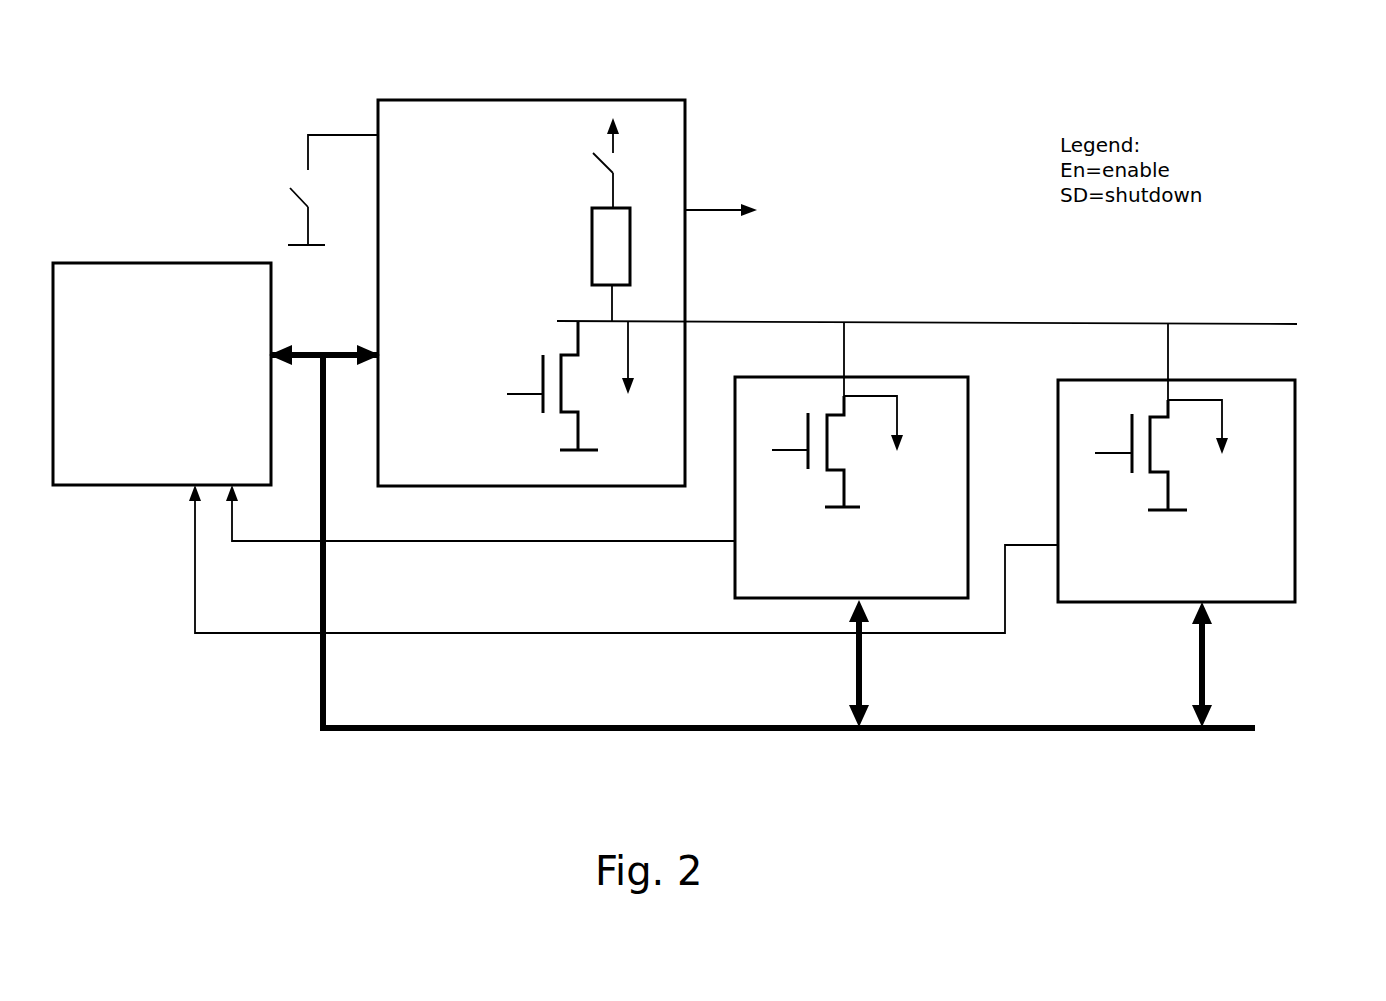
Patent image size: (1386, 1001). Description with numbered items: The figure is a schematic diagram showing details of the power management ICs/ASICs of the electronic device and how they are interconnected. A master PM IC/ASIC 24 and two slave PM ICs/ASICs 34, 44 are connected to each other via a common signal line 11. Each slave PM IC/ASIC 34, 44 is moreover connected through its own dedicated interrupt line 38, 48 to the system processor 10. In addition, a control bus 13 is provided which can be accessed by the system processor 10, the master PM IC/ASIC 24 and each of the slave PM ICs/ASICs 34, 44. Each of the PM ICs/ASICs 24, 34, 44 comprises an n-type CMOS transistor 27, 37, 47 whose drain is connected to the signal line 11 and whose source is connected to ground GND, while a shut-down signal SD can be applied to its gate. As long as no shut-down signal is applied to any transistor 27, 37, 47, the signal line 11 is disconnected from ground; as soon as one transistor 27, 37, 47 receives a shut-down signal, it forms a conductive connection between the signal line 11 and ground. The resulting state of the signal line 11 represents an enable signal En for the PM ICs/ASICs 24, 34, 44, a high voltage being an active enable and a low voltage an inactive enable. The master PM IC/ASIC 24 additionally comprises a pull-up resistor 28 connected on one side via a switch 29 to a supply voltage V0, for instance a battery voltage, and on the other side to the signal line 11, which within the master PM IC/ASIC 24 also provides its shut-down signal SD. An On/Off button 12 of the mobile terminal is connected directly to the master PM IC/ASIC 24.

The system processor 10 is at (80, 263).
The signal line 11 is at (1257, 324).
The On/Off button 12 is at (302, 168).
The control bus 13 is at (377, 729).
The master PM IC/ASIC 24 is at (470, 100).
The n-type CMOS transistor 27 is at (535, 368).
The pull-up resistor 28 is at (634, 228).
The switch 29 is at (622, 160).
The slave PM IC/ASIC 34 is at (972, 385).
The n-type CMOS transistor 37 is at (827, 413).
The interrupt line 38 is at (248, 541).
The slave PM IC/ASIC 44 is at (1295, 445).
The n-type CMOS transistor 47 is at (1150, 417).
The interrupt line 48 is at (222, 633).